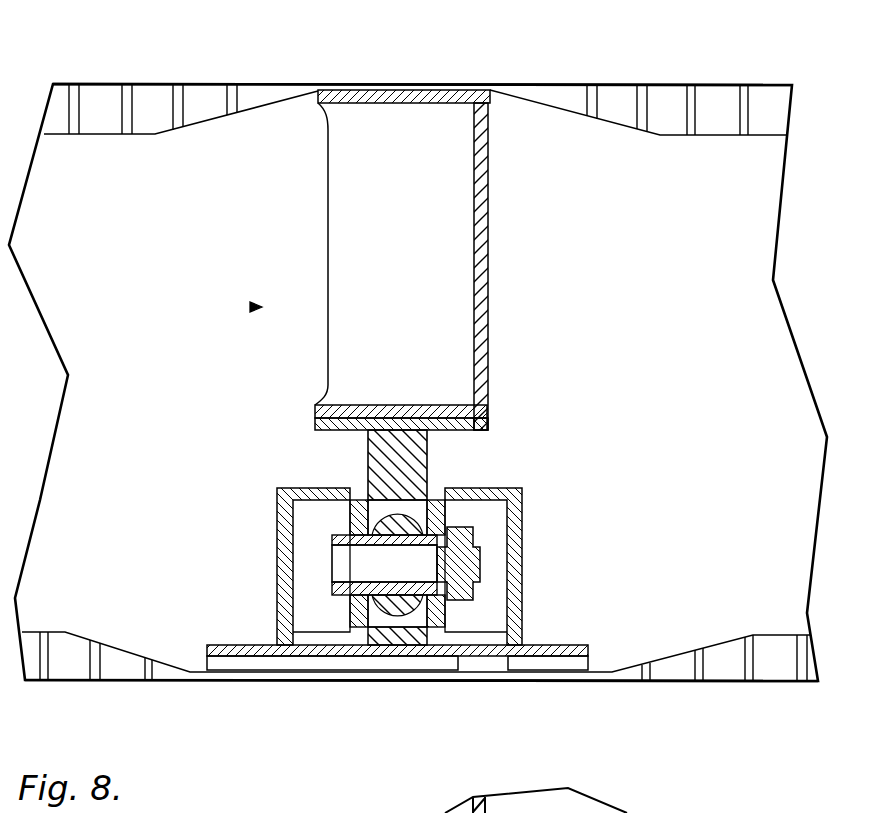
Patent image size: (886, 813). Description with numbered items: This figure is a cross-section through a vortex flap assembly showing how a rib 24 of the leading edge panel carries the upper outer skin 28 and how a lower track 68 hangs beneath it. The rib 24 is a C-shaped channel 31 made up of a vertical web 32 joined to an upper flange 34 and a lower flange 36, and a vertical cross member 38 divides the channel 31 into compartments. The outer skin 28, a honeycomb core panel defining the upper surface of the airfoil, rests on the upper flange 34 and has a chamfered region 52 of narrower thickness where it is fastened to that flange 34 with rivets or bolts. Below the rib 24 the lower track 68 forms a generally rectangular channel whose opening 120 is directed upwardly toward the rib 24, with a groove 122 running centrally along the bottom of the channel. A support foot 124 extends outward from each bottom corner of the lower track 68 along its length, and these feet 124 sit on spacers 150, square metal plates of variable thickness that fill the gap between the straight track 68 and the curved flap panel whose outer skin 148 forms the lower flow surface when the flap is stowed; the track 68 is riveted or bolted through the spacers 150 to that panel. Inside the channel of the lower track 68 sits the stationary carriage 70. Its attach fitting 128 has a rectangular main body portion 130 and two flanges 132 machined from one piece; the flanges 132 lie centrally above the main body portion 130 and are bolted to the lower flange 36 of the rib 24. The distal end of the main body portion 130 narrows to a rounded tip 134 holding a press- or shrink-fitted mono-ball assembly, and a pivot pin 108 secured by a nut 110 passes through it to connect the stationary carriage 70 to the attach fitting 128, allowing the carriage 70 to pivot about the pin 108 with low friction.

The rib 24 is at (411, 225).
The outer skin 28 is at (713, 98).
The C-shaped channel 31 is at (252, 307).
The vertical web 32 is at (488, 250).
The upper flange 34 is at (397, 97).
The lower flange 36 is at (400, 407).
The vertical cross member 38 is at (328, 202).
The chamfered region 52 is at (507, 86).
The lower track 68 is at (495, 614).
The stationary carriage 70 is at (496, 601).
The pivot pin 108 is at (338, 562).
The nut 110 is at (470, 525).
The opening 120 is at (409, 542).
The groove 122 is at (445, 645).
The support foot 124 is at (230, 645).
The attach fitting 128 is at (434, 457).
The main body portion 130 is at (368, 430).
The flange 132 is at (487, 422).
The rounded tip 134 is at (387, 645).
The outer skin 148 is at (770, 668).
The spacer 150 is at (242, 664).